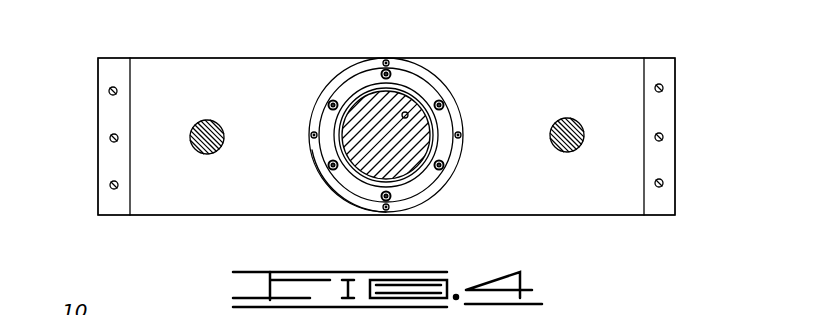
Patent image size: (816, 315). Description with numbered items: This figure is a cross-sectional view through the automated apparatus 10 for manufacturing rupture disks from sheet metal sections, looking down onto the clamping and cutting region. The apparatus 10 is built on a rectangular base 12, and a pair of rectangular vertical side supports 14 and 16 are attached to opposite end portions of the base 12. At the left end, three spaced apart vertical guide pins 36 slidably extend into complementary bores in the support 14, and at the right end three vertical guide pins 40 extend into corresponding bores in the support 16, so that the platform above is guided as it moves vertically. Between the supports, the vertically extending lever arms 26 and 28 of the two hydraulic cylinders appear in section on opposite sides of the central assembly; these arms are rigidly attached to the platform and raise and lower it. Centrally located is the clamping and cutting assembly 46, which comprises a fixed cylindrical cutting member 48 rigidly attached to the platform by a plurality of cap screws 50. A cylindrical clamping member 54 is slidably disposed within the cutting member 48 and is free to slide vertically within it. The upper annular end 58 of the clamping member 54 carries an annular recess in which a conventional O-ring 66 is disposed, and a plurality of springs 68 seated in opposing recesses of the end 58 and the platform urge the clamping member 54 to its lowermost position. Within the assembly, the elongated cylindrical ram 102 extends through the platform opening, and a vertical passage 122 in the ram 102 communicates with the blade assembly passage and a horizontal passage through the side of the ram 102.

The automated apparatus 10 is at (616, 38).
The rectangular base 12 is at (253, 70).
The vertical side support 14 is at (98, 112).
The vertical side support 16 is at (665, 110).
The lever arm 26 is at (205, 154).
The lever arm 28 is at (579, 127).
The vertical guide pins 36 is at (109, 91).
The vertical guide pins 40 is at (663, 88).
The clamping and cutting assembly 46 is at (452, 84).
The cylindrical cutting member 48 is at (322, 105).
The cap screws 50 is at (386, 60).
The cylindrical clamping member 54 is at (334, 190).
The upper annular end 58 is at (405, 112).
The O-ring 66 is at (458, 121).
The springs 68 is at (383, 71).
The cylindrical ram 102 is at (412, 143).
The vertical passage 122 is at (422, 80).